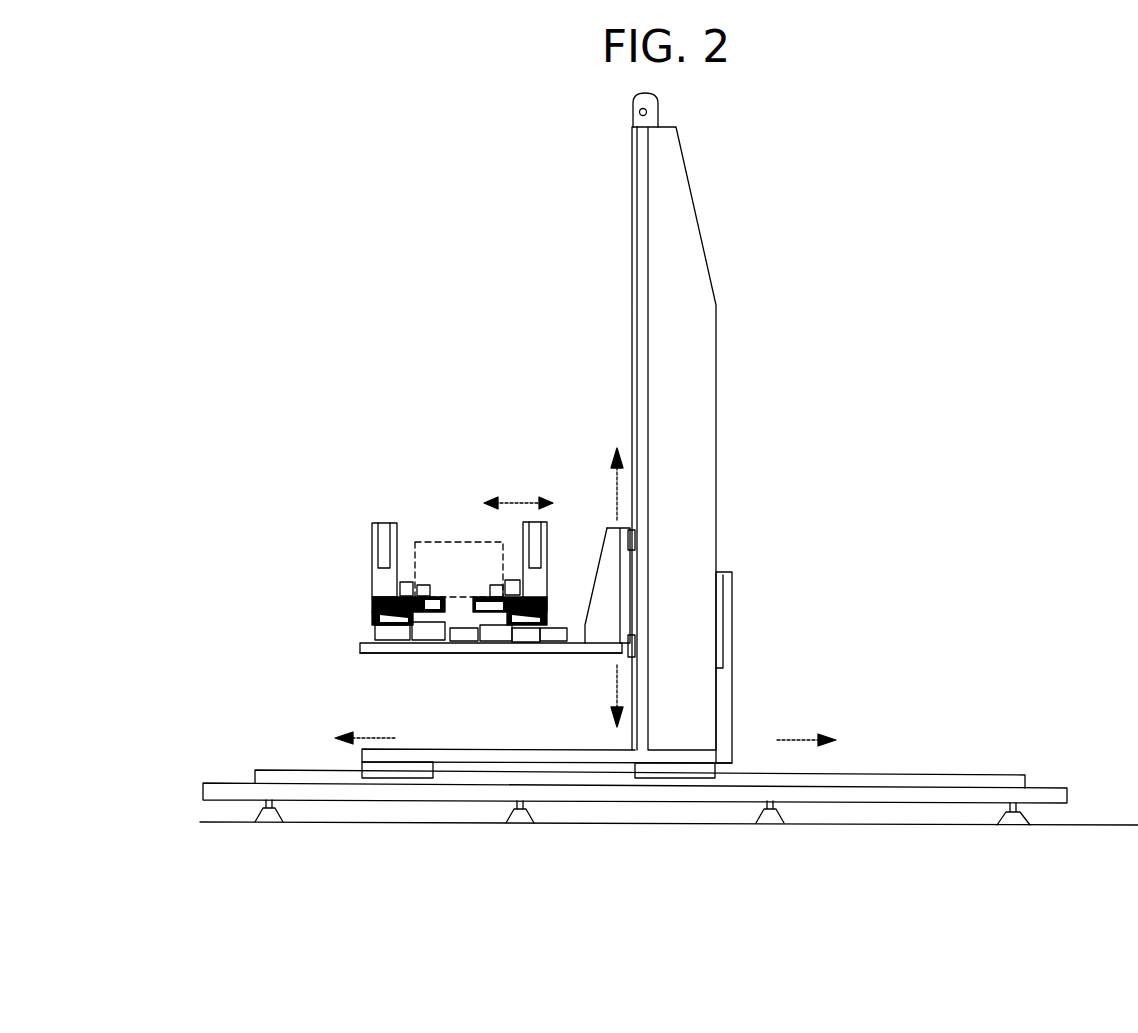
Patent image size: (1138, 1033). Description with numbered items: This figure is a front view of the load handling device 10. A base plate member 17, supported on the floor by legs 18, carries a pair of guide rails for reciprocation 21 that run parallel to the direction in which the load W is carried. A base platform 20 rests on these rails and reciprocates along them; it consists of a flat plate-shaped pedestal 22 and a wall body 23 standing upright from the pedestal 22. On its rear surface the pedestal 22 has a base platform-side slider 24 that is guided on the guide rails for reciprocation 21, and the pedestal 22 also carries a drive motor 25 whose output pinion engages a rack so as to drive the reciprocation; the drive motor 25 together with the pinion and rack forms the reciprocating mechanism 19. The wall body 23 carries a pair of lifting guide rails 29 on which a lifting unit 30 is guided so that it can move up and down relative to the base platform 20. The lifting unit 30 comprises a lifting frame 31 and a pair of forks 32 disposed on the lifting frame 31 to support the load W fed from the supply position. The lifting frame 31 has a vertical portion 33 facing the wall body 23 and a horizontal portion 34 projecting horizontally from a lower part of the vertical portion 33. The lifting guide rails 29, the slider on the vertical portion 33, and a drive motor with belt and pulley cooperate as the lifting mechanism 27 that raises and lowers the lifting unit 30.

The load handling device 10 is at (824, 264).
The base plate member 17 is at (1040, 787).
The legs 18 is at (782, 812).
The reciprocating mechanism 19 is at (752, 742).
The base platform 20 is at (548, 766).
The guide rails for reciprocation 21 is at (938, 773).
The pedestal 22 is at (460, 772).
The wall body 23 is at (648, 430).
The base platform-side slider 24 is at (400, 778).
The drive motor 25 is at (733, 702).
The lifting mechanism 27 is at (628, 523).
The lifting guide rails 29 is at (632, 320).
The lifting unit 30 is at (387, 434).
The lifting frame 31 is at (577, 655).
The forks 32 is at (483, 598).
The vertical portion 33 is at (620, 572).
The horizontal portion 34 is at (464, 655).
The load W is at (470, 542).